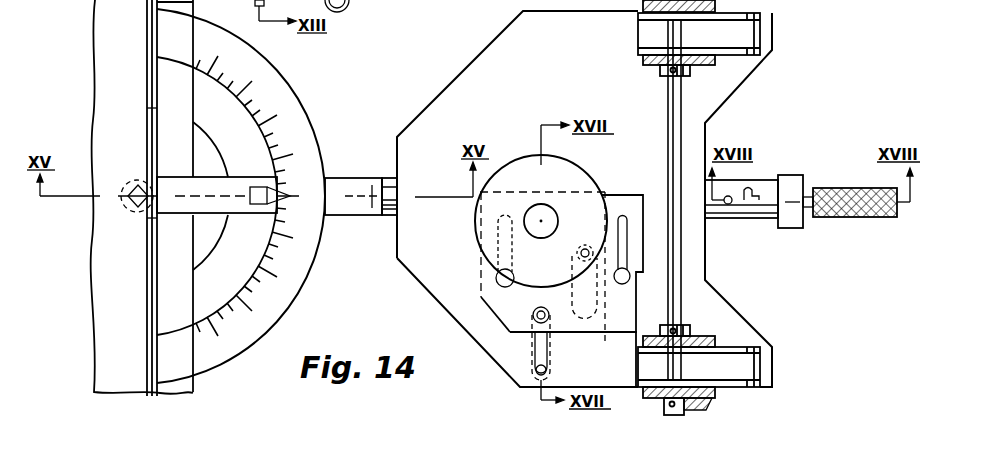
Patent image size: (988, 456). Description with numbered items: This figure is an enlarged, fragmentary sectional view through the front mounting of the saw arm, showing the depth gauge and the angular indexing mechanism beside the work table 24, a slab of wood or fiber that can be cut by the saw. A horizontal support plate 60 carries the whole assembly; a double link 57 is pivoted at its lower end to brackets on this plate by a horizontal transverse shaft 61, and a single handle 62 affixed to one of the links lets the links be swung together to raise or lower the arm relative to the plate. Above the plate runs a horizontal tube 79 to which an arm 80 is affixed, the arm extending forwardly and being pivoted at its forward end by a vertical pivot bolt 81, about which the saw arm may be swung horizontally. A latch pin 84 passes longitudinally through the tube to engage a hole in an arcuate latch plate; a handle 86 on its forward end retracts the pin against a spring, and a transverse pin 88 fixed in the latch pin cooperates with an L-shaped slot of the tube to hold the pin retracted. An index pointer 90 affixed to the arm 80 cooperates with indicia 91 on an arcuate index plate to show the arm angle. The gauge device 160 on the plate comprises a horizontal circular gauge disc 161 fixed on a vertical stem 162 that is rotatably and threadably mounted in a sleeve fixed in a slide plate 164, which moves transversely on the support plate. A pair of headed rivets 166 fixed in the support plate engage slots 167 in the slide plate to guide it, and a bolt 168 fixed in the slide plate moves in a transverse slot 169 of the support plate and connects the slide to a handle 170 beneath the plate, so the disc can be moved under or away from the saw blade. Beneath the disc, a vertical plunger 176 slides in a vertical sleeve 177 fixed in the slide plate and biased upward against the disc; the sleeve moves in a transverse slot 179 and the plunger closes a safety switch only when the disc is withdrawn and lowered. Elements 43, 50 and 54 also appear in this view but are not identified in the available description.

The work table 24 is at (93, 84).
The frame 43 is at (465, 5).
The stop 50 is at (255, 4).
The knob 54 is at (351, 7).
The double link 57 is at (716, 8).
The horizontal support plate 60 is at (463, 73).
The horizontal transverse shaft 61 is at (668, 94).
The handle 62 is at (714, 403).
The horizontal tube 79 is at (387, 216).
The arm 80 is at (357, 184).
The vertical pivot bolt 81 is at (138, 184).
The latch pin 84 is at (752, 190).
The handle 86 is at (858, 218).
The transverse pin 88 is at (729, 205).
The index pointer 90 is at (268, 214).
The indicia 91 is at (302, 276).
The gauge device 160 is at (549, 205).
The gauge disc 161 is at (586, 187).
The vertical stem 162 is at (556, 216).
The slide plate 164 is at (502, 303).
The headed rivets 166 is at (496, 279).
The slots 167 is at (500, 243).
The bolt 168 is at (532, 318).
The transverse slot 169 is at (538, 343).
The handle 170 is at (537, 372).
The vertical plunger 176 is at (578, 254).
The vertical sleeve 177 is at (581, 266).
The transverse slot 179 is at (612, 281).